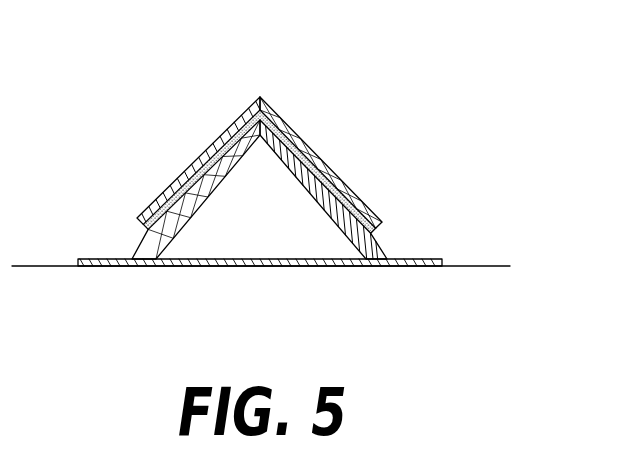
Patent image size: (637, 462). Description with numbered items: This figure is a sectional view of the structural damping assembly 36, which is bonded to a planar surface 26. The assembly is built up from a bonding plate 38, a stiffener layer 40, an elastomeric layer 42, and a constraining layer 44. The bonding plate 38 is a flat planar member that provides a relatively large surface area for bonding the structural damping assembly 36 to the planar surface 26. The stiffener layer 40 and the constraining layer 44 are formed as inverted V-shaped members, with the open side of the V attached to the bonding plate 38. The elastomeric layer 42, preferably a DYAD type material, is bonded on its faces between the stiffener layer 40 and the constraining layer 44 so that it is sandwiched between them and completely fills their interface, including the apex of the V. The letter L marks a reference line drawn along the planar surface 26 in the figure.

The structural damping assembly 36 is at (265, 147).
The constraining layer 44 is at (200, 157).
The elastomeric layer 42 is at (158, 201).
The stiffener layer 40 is at (140, 258).
The planar surface 26 is at (451, 263).
The bonding plate 38 is at (176, 267).
The reference line L is at (243, 260).